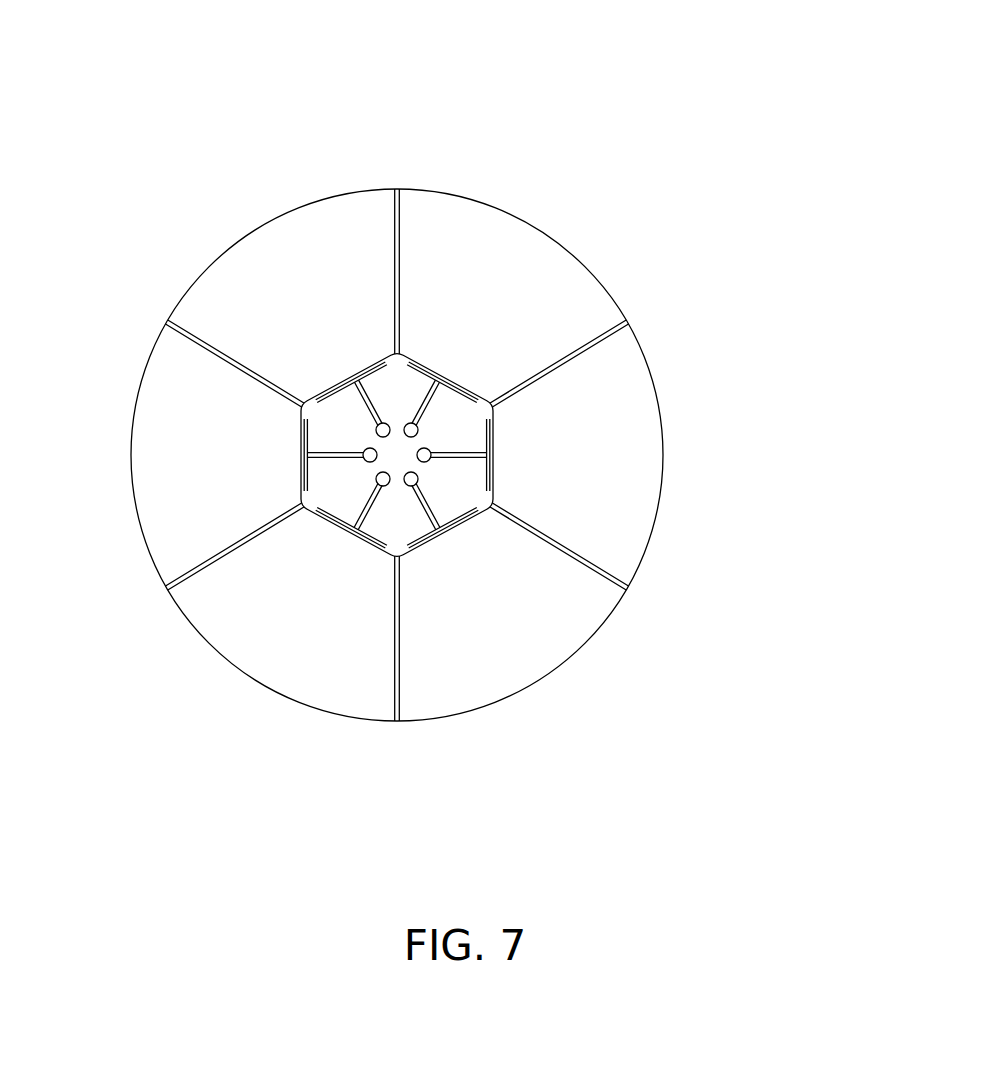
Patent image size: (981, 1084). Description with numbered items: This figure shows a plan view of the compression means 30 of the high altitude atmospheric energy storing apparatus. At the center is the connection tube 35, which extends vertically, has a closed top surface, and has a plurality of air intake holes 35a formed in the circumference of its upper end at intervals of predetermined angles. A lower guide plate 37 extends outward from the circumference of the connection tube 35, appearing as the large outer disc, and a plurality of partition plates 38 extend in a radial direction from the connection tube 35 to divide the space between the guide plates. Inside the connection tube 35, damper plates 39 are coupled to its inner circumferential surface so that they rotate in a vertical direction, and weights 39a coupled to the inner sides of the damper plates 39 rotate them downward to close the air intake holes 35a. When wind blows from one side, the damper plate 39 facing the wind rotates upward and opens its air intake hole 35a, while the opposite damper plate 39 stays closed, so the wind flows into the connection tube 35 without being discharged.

The compression means 30 is at (712, 342).
The connection tube 35 is at (303, 513).
The air intake holes 35a is at (357, 358).
The lower guide plate 37 is at (295, 698).
The partition plates 38 is at (208, 334).
The damper plates 39 is at (338, 387).
The weights 39a is at (391, 421).